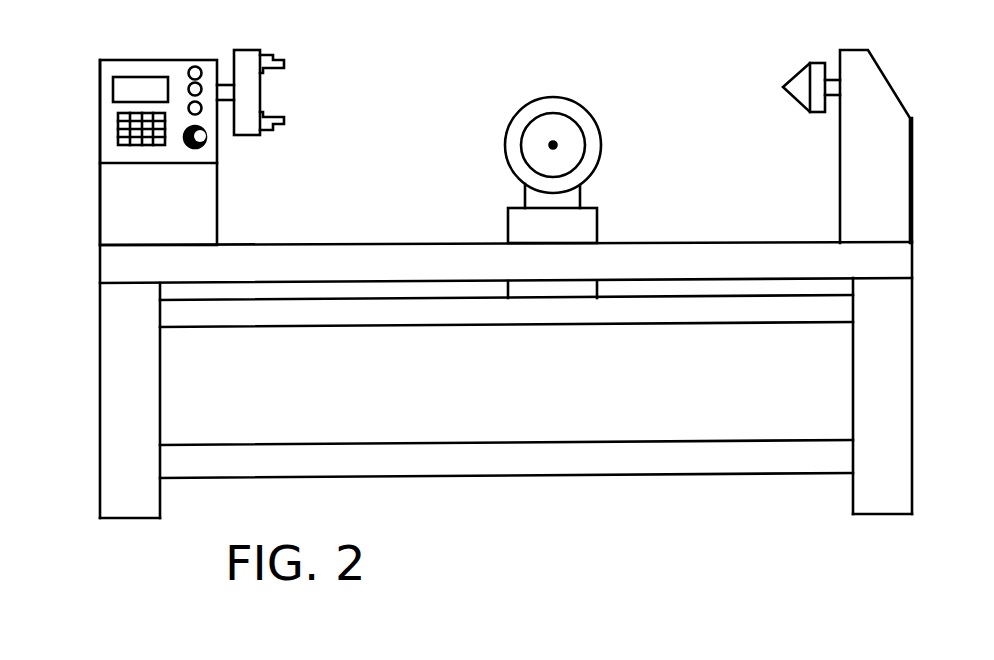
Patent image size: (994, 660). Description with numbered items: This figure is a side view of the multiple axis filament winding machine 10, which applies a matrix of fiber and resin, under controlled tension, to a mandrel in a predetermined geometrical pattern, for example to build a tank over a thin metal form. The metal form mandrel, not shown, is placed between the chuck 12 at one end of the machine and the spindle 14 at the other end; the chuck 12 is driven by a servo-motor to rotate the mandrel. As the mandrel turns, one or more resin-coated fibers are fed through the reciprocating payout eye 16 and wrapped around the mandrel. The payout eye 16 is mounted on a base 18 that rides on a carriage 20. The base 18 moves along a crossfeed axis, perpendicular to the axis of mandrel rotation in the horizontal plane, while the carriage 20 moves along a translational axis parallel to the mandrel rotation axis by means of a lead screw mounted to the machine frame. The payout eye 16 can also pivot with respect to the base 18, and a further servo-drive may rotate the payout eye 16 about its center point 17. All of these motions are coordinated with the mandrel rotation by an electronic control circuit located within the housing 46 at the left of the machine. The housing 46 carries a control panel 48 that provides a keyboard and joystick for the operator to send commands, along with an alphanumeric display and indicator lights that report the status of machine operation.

The filament winding machine 10 is at (396, 75).
The chuck 12 is at (245, 128).
The spindle 14 is at (803, 97).
The payout eye 16 is at (590, 117).
The center point 17 is at (553, 145).
The base 18 is at (577, 195).
The carriage 20 is at (593, 233).
The housing 46 is at (132, 210).
The control panel 48 is at (132, 67).